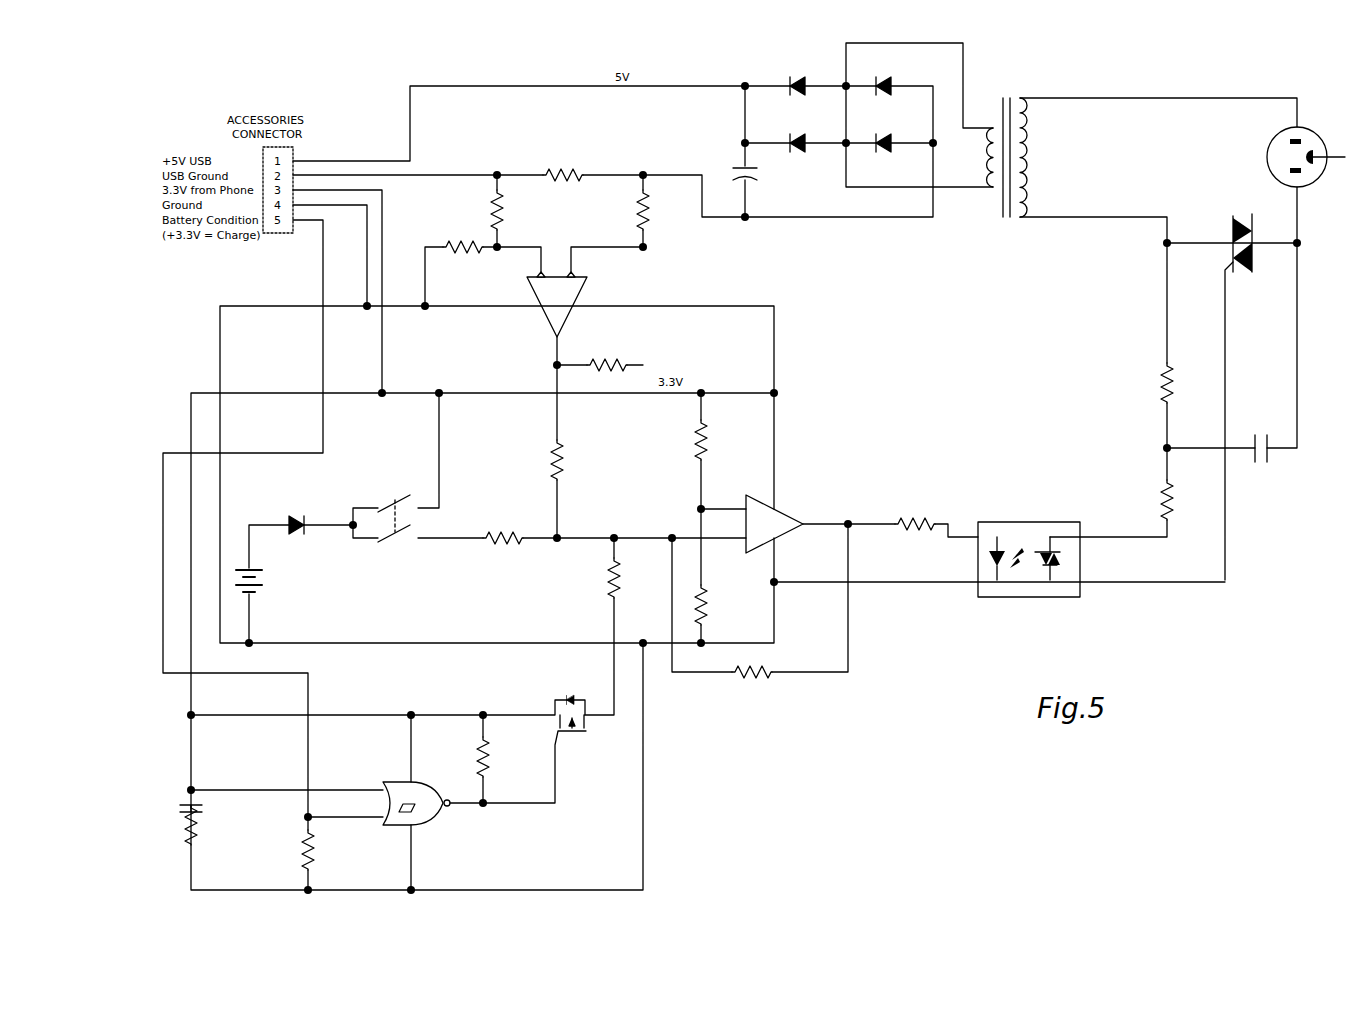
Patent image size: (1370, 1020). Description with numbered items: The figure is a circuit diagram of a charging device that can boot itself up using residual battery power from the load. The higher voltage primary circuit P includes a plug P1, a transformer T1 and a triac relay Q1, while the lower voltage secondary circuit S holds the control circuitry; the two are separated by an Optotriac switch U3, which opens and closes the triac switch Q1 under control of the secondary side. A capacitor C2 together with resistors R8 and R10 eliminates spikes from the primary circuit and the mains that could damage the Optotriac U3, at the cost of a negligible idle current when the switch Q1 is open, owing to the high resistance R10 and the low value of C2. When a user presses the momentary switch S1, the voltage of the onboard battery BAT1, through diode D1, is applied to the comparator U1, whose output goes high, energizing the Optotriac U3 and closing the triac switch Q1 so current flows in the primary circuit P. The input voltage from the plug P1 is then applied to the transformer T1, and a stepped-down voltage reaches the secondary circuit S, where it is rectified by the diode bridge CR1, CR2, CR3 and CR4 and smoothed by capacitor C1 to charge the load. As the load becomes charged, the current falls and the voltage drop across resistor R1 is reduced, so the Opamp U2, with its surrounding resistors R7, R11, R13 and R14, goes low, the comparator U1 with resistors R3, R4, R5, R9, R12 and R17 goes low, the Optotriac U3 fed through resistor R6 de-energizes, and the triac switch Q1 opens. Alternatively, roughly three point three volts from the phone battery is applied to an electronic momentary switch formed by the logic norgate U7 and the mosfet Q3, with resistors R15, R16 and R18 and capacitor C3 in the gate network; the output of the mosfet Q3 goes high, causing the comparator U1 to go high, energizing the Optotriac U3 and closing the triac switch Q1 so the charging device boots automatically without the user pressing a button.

The secondary circuit S is at (668, 86).
The primary circuit P is at (1133, 98).
The resistor R1 is at (560, 175).
The resistor R3 is at (500, 538).
The resistor R4 is at (717, 440).
The resistor R5 is at (720, 605).
The resistor R6 is at (912, 523).
The resistor R7 is at (658, 210).
The resistor R8 is at (1179, 500).
The resistor R9 is at (752, 672).
The resistor R10 is at (1181, 383).
The resistor R11 is at (605, 366).
The resistor R12 is at (570, 459).
The resistor R13 is at (459, 249).
The resistor R14 is at (479, 210).
The resistor R15 is at (206, 824).
The resistor R16 is at (501, 757).
The resistor R17 is at (628, 576).
The resistor R18 is at (323, 850).
The capacitor C1 is at (753, 167).
The capacitor C2 is at (1260, 433).
The capacitor C3 is at (173, 766).
The diode CR1 is at (796, 78).
The diode CR2 is at (796, 135).
The diode CR3 is at (881, 78).
The diode CR4 is at (881, 135).
The diode D1 is at (298, 534).
The onboard battery BAT1 is at (264, 584).
The momentary switch S1 is at (402, 540).
The comparator U1 is at (791, 522).
The Opamp U2 is at (544, 310).
The Optotriac switch U3 is at (1029, 561).
The logic norgate U7 is at (419, 799).
The triac relay Q1 is at (1230, 228).
The mosfet Q3 is at (584, 719).
The transformer T1 is at (1007, 149).
The plug P1 is at (1301, 149).